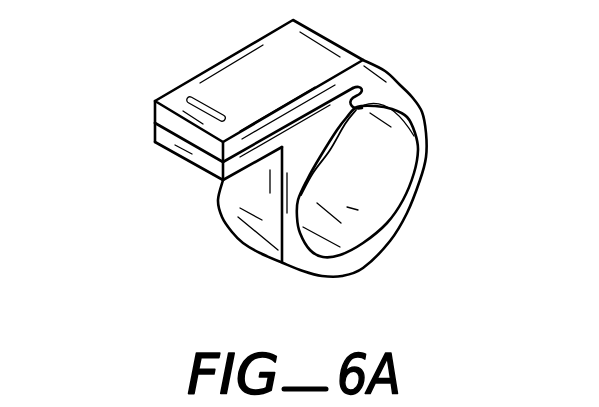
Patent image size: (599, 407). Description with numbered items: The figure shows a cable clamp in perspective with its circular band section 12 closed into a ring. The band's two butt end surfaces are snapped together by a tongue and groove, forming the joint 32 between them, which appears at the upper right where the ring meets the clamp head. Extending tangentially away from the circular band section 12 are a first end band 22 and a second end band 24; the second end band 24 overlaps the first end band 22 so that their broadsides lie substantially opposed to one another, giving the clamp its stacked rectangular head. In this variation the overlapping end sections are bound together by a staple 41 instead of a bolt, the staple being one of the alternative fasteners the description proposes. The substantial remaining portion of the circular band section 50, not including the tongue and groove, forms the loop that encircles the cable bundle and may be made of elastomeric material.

The circular band section 12 is at (387, 240).
The first end band 22 is at (190, 162).
The second end band 24 is at (224, 72).
The joint 32 is at (365, 95).
The staple 41 is at (183, 112).
The remaining portion of the circular band section 50 is at (383, 150).